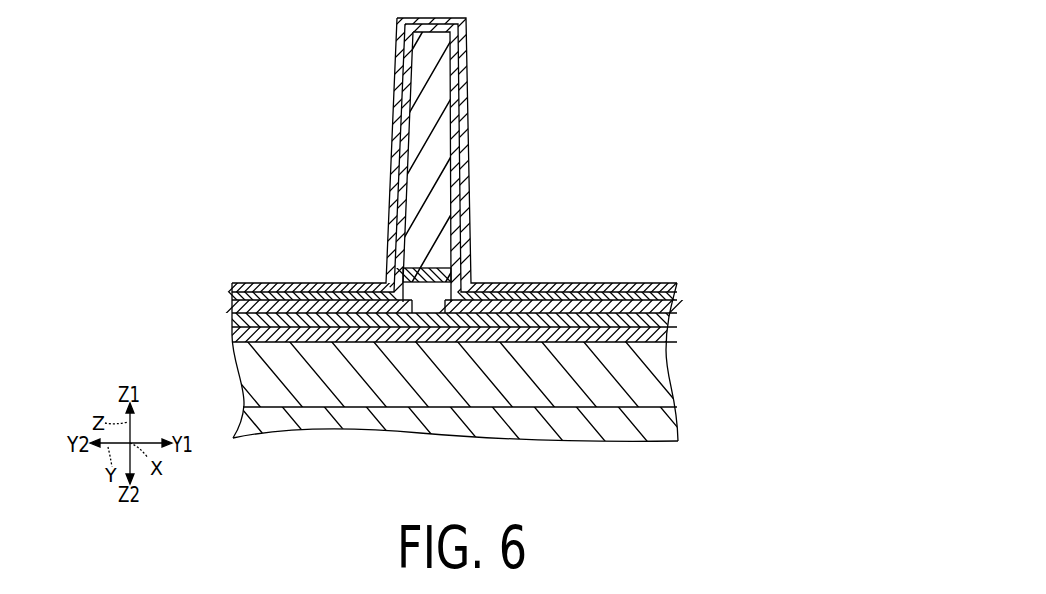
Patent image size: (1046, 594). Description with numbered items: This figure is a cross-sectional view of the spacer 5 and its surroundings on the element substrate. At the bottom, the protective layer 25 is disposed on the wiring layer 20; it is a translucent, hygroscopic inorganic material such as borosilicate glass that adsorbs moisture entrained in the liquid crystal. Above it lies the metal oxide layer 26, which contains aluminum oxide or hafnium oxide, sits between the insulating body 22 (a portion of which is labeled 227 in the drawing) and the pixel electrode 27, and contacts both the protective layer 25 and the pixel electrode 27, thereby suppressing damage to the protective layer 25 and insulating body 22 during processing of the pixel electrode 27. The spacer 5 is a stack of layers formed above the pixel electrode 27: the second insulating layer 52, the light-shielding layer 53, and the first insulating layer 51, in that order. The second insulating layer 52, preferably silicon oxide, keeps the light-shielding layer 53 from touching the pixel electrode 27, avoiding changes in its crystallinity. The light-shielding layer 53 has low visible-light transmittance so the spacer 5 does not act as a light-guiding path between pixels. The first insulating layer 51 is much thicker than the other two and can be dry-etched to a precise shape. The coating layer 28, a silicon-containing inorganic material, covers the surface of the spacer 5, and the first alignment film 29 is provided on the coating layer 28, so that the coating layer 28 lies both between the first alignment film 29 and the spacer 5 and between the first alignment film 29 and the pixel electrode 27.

The spacer 5 is at (464, 172).
The wiring layer 20 is at (684, 410).
The insulating body 22 is at (513, 390).
The substrate layer 227 is at (652, 378).
The protective layer 25 is at (650, 335).
The metal oxide layer 26 is at (652, 322).
The pixel electrode 27 is at (652, 307).
The coating layer 28 is at (459, 74).
The first alignment film 29 is at (469, 49).
The first insulating layer 51 is at (440, 208).
The second insulating layer 52 is at (415, 300).
The light-shielding layer 53 is at (451, 274).